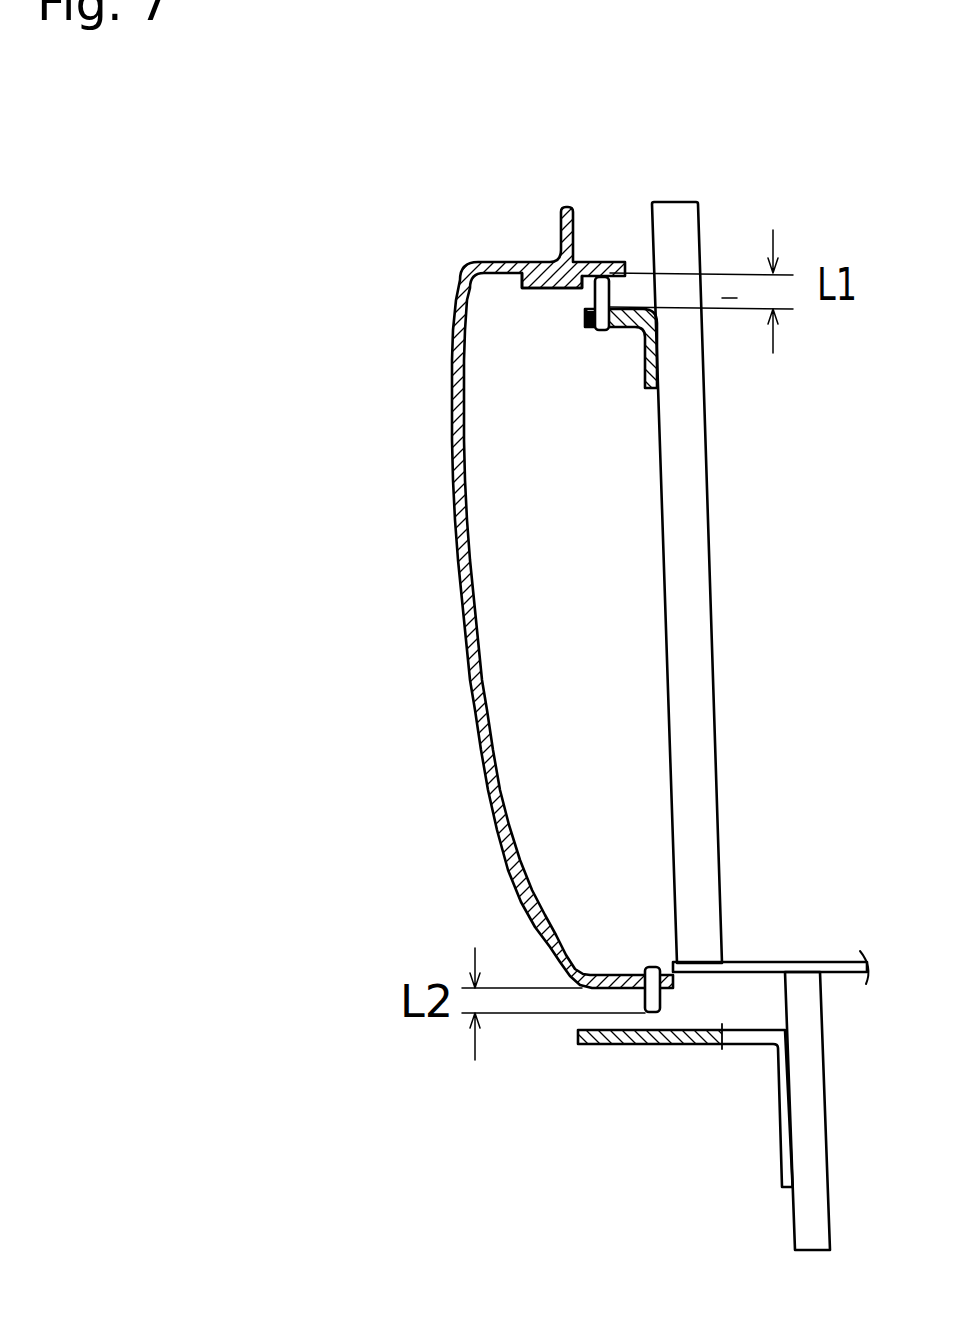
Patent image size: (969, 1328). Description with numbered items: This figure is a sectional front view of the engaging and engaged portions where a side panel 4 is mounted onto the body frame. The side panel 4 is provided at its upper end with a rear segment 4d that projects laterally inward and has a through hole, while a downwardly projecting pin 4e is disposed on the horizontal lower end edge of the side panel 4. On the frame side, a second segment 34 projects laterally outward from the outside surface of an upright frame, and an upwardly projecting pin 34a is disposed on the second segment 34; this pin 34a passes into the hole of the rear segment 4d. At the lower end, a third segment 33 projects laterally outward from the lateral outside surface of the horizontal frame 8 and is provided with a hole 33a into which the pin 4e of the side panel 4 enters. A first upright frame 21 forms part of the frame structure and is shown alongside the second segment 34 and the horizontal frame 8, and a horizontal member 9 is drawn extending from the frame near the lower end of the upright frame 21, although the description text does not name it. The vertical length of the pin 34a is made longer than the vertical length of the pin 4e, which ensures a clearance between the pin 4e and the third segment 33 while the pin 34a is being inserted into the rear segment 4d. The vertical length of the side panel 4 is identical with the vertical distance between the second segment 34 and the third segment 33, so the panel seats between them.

The side panel 4 is at (462, 617).
The rear segment 4d is at (555, 288).
The pin 4e is at (645, 995).
The first upright frame 21 is at (705, 652).
The second segment 34 is at (622, 330).
The pin 34a is at (595, 300).
The third segment 33 is at (652, 1105).
The hole 33a is at (653, 1038).
The horizontal frame 8 is at (822, 1130).
The floor/support panel 9 is at (847, 960).